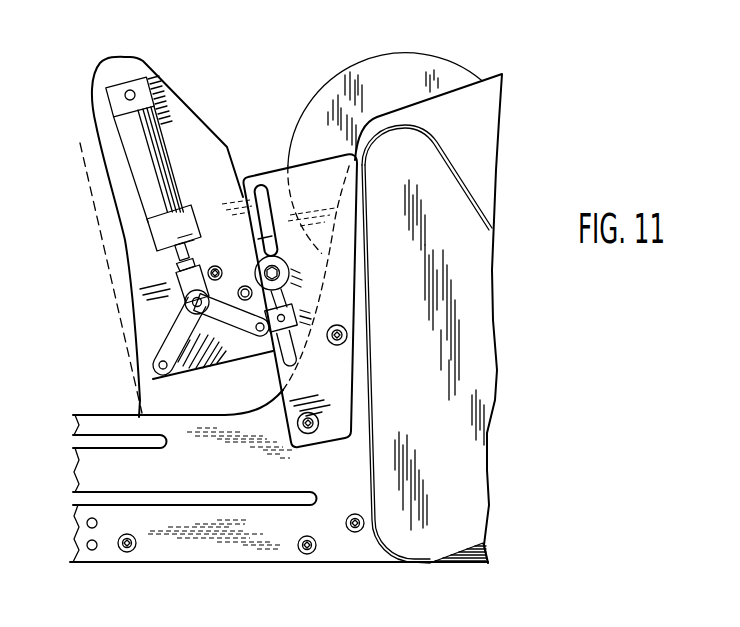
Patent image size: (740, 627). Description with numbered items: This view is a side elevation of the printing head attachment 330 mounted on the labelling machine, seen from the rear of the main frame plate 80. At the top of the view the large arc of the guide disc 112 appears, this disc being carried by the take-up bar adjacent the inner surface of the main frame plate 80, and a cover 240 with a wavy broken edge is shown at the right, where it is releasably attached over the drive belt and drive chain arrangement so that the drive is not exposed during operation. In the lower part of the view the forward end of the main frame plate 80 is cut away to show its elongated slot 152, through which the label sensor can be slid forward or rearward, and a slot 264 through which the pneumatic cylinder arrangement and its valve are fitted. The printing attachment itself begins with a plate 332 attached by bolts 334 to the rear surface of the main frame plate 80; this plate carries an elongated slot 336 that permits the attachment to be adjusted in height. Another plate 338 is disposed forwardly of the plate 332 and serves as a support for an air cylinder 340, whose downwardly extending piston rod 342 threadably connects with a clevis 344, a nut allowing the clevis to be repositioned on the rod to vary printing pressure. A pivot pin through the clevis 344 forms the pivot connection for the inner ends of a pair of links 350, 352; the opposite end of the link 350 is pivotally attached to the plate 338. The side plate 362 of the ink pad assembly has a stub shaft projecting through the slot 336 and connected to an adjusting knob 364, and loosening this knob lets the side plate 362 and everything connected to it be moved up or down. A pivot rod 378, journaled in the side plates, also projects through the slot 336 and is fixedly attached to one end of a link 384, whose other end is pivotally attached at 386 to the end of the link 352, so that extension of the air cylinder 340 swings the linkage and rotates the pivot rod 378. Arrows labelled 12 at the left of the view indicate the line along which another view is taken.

The section line 12- 12 is at (86, 186).
The main frame plate 80 is at (255, 553).
The guide disc 112 is at (342, 87).
The elongated slot 152 is at (226, 498).
The cover 240 is at (460, 510).
The slot 264 is at (98, 443).
The printing head attachment 330 is at (257, 116).
The plate 332 is at (342, 398).
The bolts 334 is at (311, 434).
The elongated slot 336 is at (298, 355).
The plate 338 is at (193, 120).
The air cylinder 340 is at (173, 191).
The piston rod 342 is at (175, 264).
The clevis 344 is at (178, 282).
The link 350 is at (173, 373).
The link 352 is at (222, 267).
The side plate 362 is at (272, 247).
The adjusting knob 364 is at (308, 264).
The pivot rod 378 is at (298, 317).
The link 384 is at (270, 353).
The pivotal attachment 386 is at (254, 337).